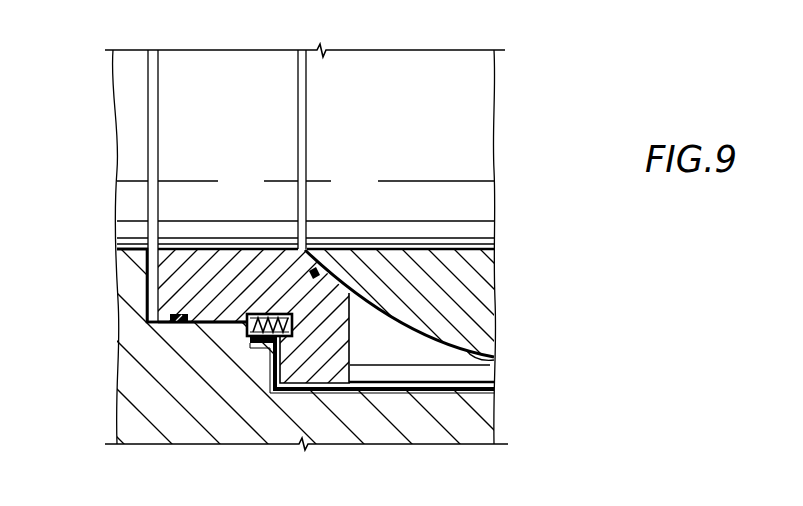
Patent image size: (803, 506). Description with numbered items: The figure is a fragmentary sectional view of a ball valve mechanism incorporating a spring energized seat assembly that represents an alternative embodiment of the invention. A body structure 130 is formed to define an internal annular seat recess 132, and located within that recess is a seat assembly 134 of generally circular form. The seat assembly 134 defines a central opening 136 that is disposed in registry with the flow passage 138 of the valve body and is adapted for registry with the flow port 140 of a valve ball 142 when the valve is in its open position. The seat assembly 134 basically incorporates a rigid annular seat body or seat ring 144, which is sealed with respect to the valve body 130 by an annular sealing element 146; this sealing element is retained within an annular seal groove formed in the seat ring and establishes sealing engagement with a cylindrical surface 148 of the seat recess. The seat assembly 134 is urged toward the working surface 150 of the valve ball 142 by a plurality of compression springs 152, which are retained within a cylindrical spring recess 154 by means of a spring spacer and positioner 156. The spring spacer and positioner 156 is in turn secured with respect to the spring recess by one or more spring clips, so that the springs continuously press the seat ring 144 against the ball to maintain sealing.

The body structure 130 is at (147, 428).
The internal annular seat recess 132 is at (157, 297).
The seat assembly 134 is at (245, 240).
The central opening 136 is at (263, 63).
The flow passage 138 is at (130, 248).
The flow port 140 is at (450, 247).
The valve ball 142 is at (470, 300).
The seat ring 144 is at (197, 262).
The annular sealing element 146 is at (180, 323).
The cylindrical surface 148 is at (227, 325).
The working surface 150 is at (467, 360).
The compression springs 152 is at (292, 334).
The cylindrical spring recess 154 is at (272, 313).
The spring spacer and positioner 156 is at (261, 347).